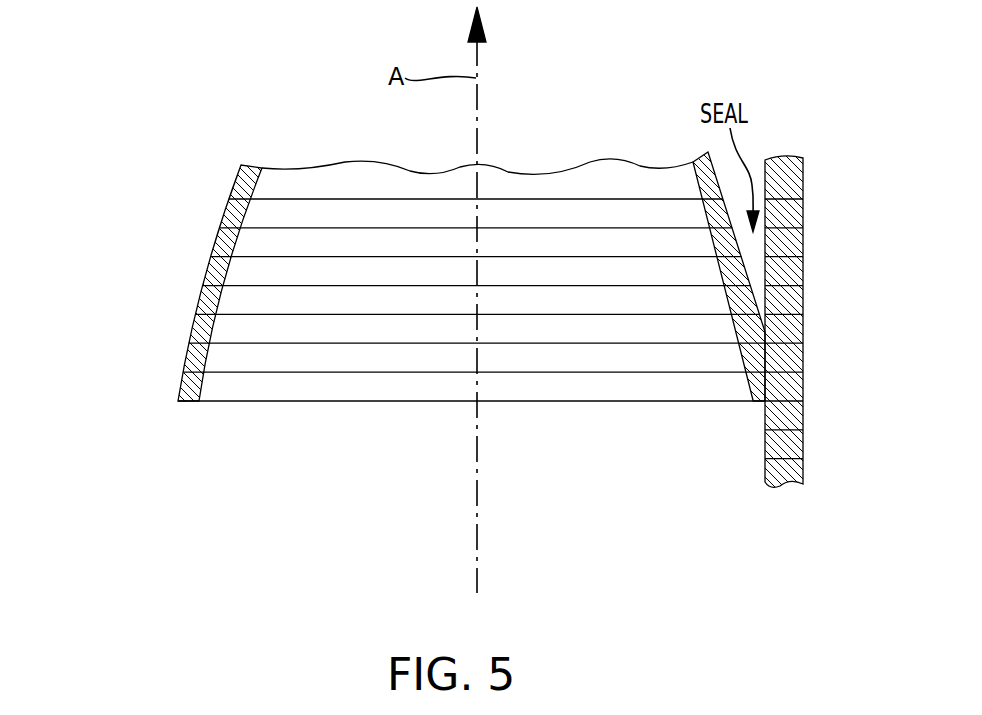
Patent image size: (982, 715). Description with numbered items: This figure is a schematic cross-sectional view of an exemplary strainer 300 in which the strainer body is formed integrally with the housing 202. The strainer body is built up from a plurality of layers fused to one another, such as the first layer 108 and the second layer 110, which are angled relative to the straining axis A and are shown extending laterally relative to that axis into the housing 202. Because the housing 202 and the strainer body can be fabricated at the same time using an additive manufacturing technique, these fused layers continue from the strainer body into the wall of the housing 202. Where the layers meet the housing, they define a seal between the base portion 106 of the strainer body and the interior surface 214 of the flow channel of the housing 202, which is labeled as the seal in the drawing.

The base portion 106 is at (138, 399).
The exemplary strainer 300 is at (457, 366).
The first layer 108 is at (580, 358).
The second layer 110 is at (690, 388).
The interior surface 214 is at (767, 243).
The housing 202 is at (830, 396).